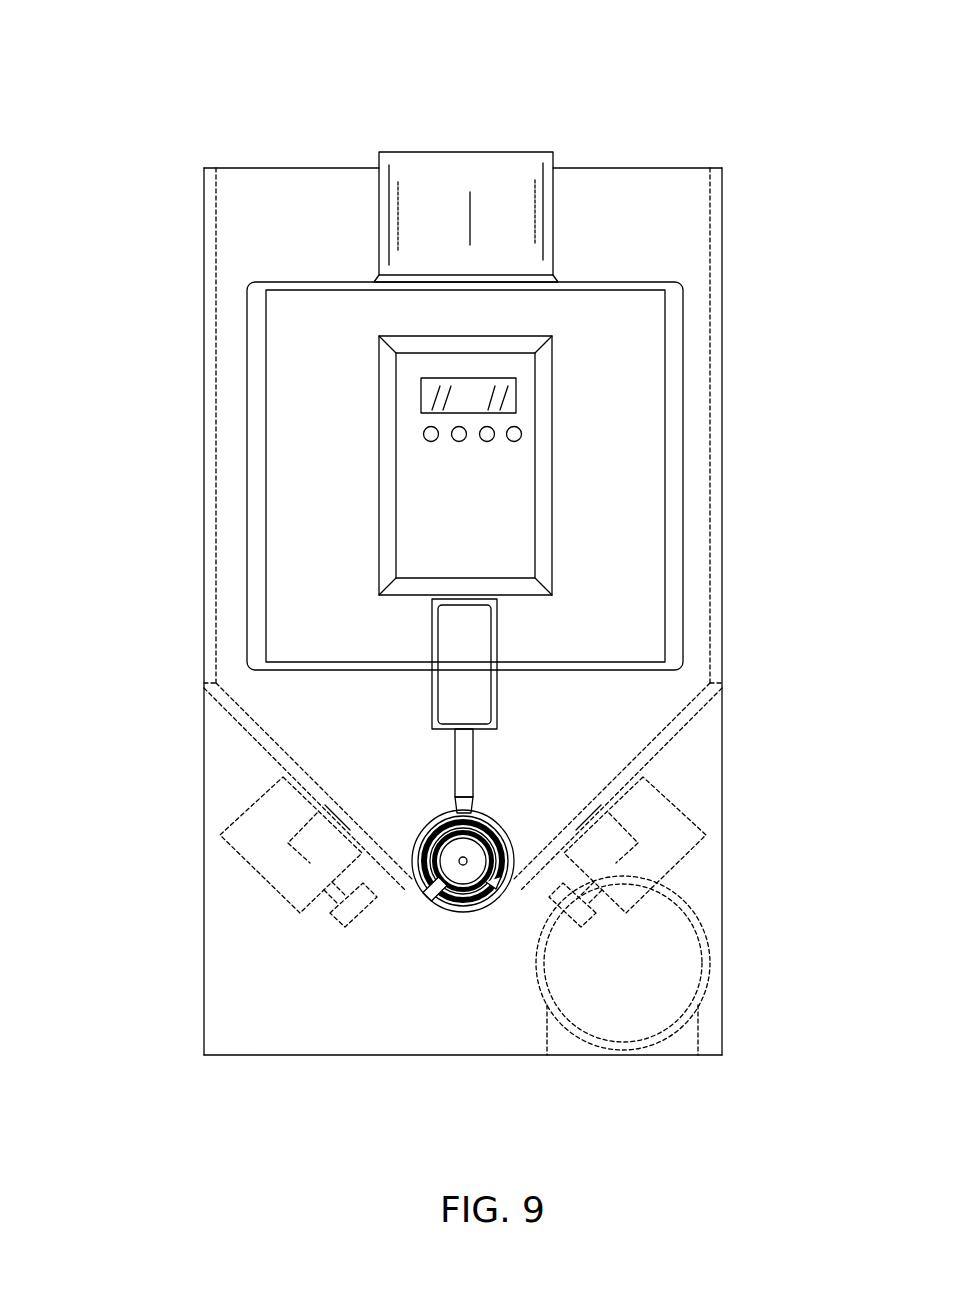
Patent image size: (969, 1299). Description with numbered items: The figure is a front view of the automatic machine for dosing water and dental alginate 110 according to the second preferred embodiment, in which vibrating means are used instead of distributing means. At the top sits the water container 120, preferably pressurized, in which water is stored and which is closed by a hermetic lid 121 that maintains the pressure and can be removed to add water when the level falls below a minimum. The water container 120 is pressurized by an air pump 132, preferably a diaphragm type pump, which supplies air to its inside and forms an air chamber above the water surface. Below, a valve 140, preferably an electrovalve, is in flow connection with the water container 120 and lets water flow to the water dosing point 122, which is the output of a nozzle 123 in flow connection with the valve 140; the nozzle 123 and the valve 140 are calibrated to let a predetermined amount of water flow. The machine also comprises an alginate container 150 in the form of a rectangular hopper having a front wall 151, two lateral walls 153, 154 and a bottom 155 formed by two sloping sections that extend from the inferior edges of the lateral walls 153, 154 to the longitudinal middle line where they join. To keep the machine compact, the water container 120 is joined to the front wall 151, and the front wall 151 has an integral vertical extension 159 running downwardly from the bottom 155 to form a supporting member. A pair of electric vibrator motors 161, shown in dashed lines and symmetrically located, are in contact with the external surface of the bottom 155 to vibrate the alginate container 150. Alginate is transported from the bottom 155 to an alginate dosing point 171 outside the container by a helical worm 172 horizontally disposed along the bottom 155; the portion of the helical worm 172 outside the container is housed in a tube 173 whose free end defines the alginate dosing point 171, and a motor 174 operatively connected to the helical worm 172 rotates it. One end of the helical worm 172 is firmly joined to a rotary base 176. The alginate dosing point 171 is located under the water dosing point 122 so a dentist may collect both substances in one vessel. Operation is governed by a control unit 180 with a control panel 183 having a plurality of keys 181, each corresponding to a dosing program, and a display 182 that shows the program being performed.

The automatic machine for dosing water and dental alginate 110 is at (152, 112).
The water container 120 is at (683, 370).
The hermetic lid 121 is at (484, 152).
The water dosing point 122 is at (478, 812).
The nozzle 123 is at (474, 748).
The air pump 132 is at (552, 432).
The valve 140 is at (494, 622).
The alginate container 150 is at (653, 167).
The front wall 151 is at (311, 237).
The lateral wall 153 is at (723, 233).
The lateral wall 154 is at (204, 258).
The bottom 155 is at (252, 733).
The vertical extension 159 is at (268, 1015).
The electric vibrator motor 161 is at (238, 812).
The alginate dosing point 171 is at (462, 918).
The helical worm 172 is at (448, 897).
The tube 173 is at (488, 903).
The motor 174 is at (662, 974).
The rotary base 176 is at (433, 892).
The control unit 180 is at (536, 492).
The keys 181 is at (423, 437).
The display 182 is at (423, 397).
The control panel 183 is at (490, 528).